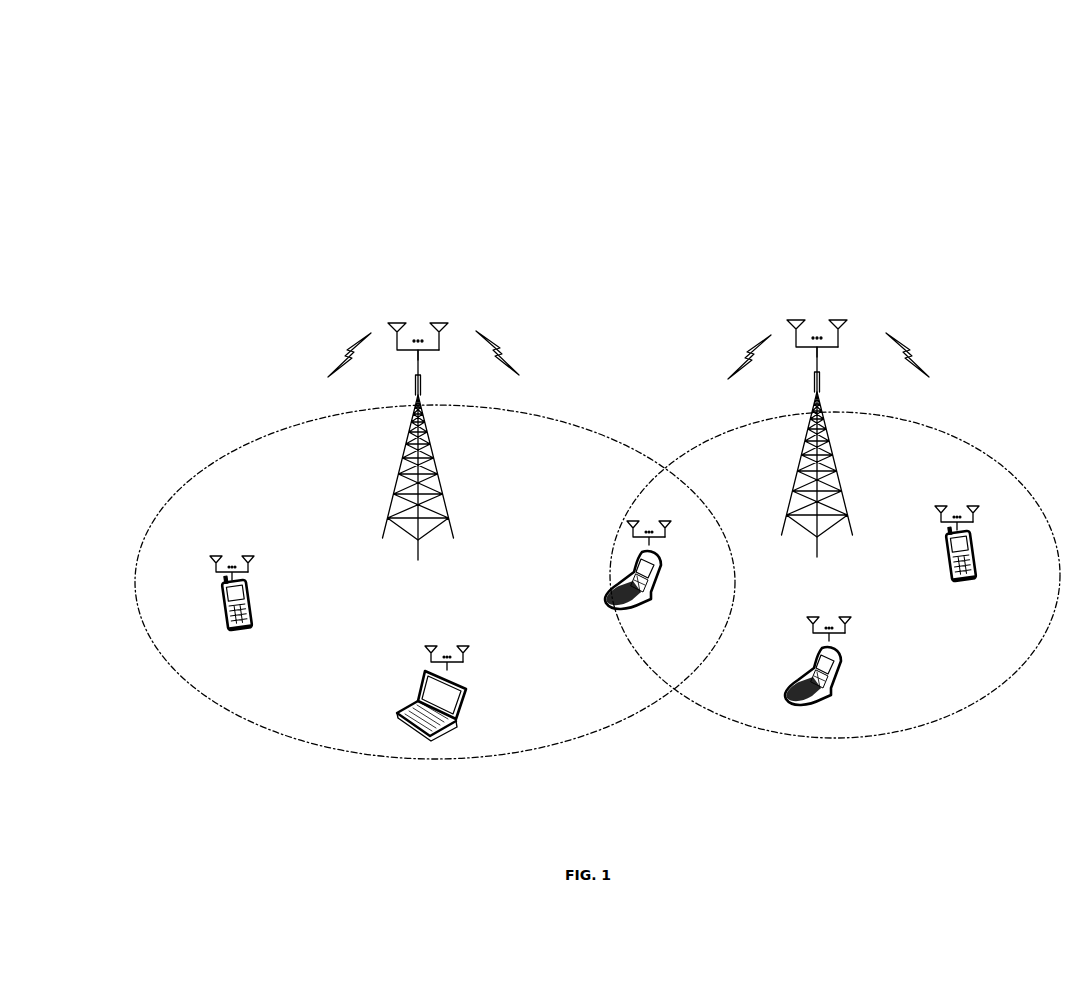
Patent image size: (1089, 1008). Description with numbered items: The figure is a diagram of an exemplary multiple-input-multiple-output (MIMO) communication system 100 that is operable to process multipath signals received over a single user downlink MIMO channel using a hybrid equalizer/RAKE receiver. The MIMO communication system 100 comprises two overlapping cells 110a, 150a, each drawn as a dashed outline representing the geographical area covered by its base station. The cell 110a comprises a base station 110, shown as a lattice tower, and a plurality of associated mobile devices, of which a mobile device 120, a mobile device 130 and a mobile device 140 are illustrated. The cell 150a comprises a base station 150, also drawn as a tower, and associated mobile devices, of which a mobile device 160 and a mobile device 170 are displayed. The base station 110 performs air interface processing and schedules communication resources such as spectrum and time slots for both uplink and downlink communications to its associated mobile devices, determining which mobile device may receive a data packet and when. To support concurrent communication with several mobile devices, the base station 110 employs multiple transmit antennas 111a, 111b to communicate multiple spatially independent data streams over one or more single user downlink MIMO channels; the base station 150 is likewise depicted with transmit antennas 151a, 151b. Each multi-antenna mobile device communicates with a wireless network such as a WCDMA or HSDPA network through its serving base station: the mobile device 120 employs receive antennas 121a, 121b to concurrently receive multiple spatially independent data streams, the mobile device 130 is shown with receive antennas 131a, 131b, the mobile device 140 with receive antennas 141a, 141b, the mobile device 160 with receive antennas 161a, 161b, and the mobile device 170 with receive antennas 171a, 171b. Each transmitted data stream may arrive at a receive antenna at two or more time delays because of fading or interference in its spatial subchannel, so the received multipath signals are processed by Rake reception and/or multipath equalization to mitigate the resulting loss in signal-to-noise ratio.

The MIMO communication system 100 is at (231, 113).
The base station 110 is at (437, 396).
The cell 110a is at (404, 760).
The transmit antenna 111a is at (407, 333).
The transmit antenna 111b is at (447, 328).
The mobile device 120 is at (255, 616).
The receive antenna 121a is at (221, 556).
The receive antenna 121b is at (266, 552).
The mobile device 130 is at (462, 703).
The receive antenna 131a is at (430, 647).
The receive antenna 131b is at (472, 643).
The mobile device 140 is at (657, 609).
The receive antenna 141a is at (631, 524).
The receive antenna 141b is at (671, 520).
The base station 150 is at (836, 392).
The cell 150a is at (883, 732).
The transmit antenna 151a is at (806, 330).
The transmit antenna 151b is at (846, 325).
The mobile device 160 is at (977, 566).
The receive antenna 161a is at (945, 507).
The receive antenna 161b is at (990, 503).
The mobile device 170 is at (837, 705).
The receive antenna 171a is at (811, 620).
The receive antenna 171b is at (851, 616).